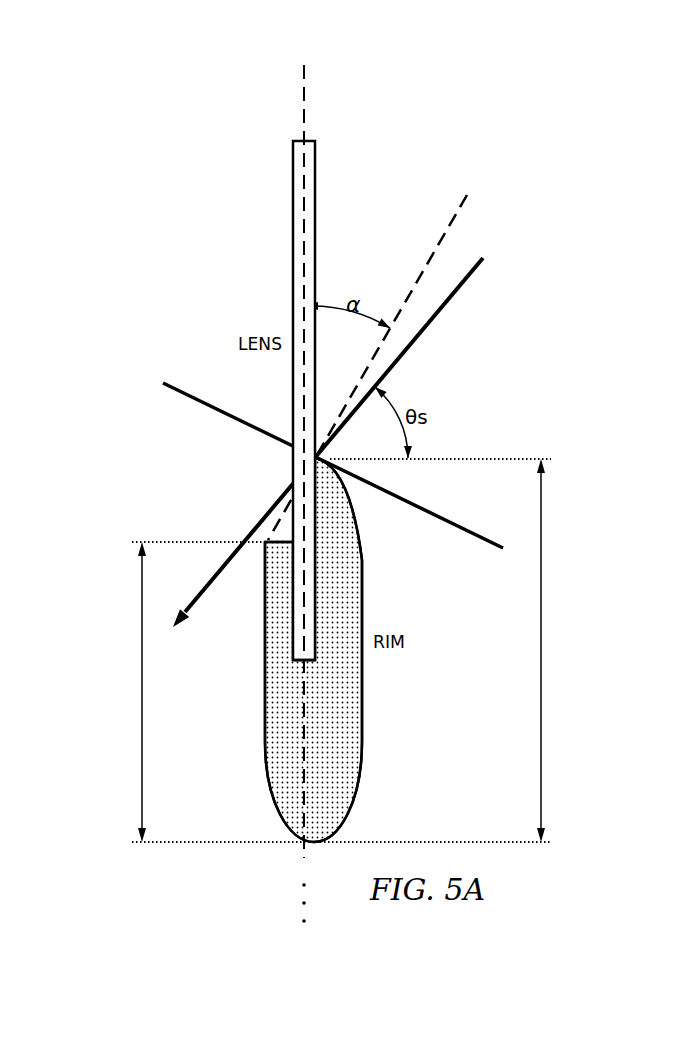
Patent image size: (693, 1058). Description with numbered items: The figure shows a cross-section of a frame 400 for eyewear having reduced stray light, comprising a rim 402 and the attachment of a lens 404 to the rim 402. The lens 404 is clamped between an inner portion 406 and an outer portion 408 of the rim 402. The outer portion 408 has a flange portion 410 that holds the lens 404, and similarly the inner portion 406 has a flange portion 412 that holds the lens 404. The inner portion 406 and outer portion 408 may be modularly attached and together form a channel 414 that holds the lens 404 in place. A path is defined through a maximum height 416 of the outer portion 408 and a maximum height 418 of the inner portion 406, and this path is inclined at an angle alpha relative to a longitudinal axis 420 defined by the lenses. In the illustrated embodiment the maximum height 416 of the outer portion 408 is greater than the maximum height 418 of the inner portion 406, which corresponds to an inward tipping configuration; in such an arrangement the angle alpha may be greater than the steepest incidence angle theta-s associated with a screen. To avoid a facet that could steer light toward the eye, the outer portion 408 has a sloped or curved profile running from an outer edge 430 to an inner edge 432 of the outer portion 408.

The frame 400 is at (194, 255).
The rim 402 is at (363, 706).
The lens 404 is at (316, 190).
The inner portion 406 is at (268, 738).
The outer portion 408 is at (343, 752).
The flange portion 410 is at (358, 520).
The flange portion 412 is at (265, 554).
The channel 414 is at (305, 595).
The maximum height 416 is at (543, 650).
The maximum height 418 is at (141, 692).
The longitudinal axis 420 is at (303, 108).
The outer edge 430 is at (362, 568).
The inner edge 432 is at (310, 663).